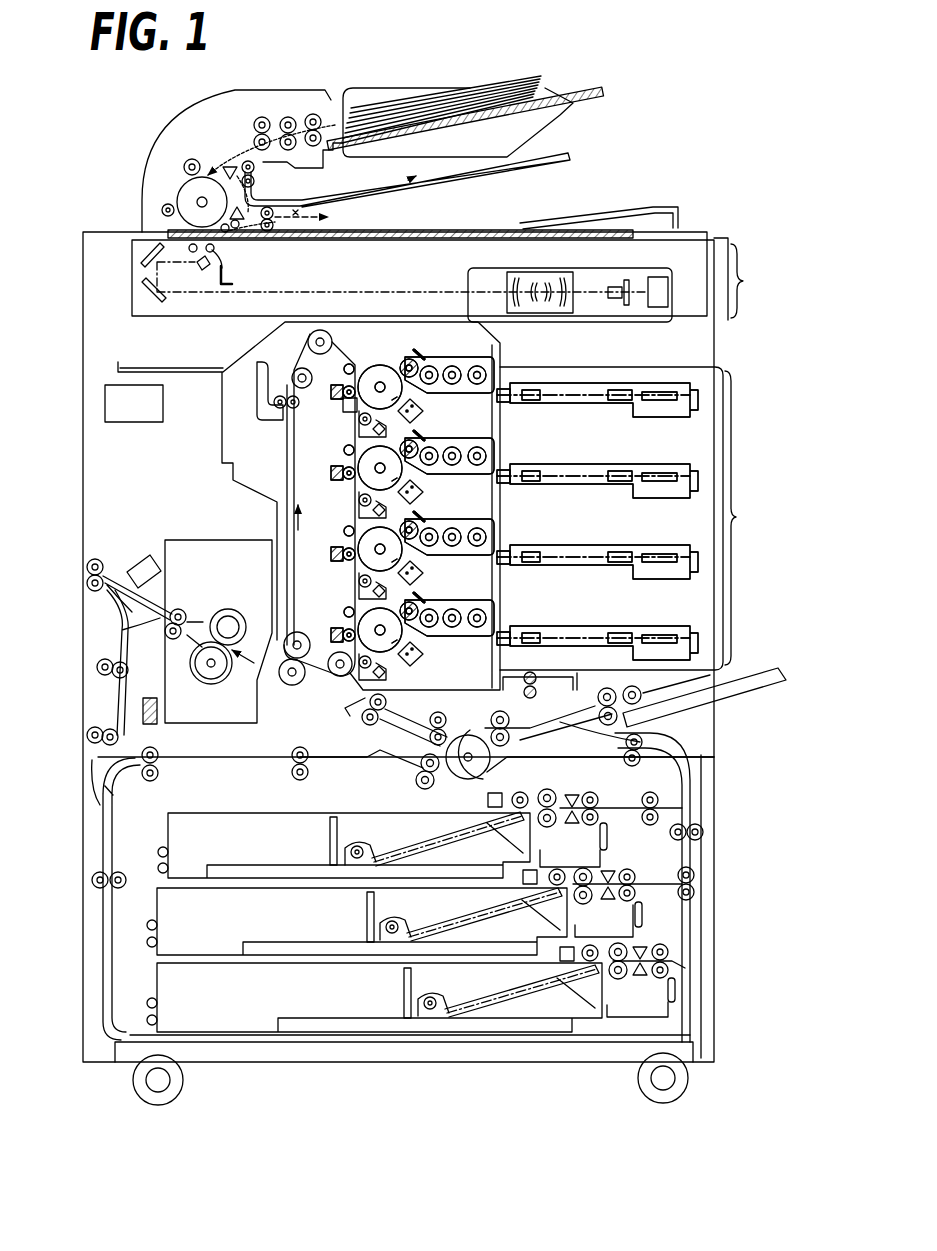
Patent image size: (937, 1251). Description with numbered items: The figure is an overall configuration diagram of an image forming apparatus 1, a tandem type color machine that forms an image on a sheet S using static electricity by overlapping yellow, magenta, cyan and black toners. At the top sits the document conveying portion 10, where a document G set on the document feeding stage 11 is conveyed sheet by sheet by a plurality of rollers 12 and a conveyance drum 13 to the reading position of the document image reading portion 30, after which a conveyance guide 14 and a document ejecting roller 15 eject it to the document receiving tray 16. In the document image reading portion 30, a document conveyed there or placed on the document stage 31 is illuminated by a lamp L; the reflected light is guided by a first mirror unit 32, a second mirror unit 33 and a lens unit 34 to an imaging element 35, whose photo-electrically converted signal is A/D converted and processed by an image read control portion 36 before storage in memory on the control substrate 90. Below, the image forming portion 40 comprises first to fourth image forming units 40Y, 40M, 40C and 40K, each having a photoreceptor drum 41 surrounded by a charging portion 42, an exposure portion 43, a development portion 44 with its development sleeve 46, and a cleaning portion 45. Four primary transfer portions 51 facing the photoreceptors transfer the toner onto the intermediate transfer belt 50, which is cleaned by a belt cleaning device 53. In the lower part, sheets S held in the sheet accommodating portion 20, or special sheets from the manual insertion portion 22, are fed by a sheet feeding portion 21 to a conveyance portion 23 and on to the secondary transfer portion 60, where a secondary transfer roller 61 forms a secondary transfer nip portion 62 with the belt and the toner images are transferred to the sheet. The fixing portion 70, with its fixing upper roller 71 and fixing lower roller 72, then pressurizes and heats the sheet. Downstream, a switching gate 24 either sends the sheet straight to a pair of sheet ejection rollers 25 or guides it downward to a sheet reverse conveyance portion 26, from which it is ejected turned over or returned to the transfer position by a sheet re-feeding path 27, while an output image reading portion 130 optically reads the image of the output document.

The image forming apparatus 1 is at (702, 202).
The document conveying portion 10 is at (615, 174).
The document feeding stage 11 is at (590, 90).
The plurality of rollers 12 is at (204, 170).
The conveyance drum 13 is at (178, 200).
The conveyance guide 14 is at (232, 238).
The document ejecting roller 15 is at (256, 176).
The document receiving tray 16 is at (535, 158).
The sheet accommodating portion 20 is at (168, 815).
The sheet feeding portion 21 is at (552, 790).
The manual insertion portion 22 is at (758, 688).
The conveyance portion 23 is at (418, 720).
The switching gate 24 is at (118, 600).
The pair of sheet ejection rollers 25 is at (88, 572).
The sheet reverse conveyance portion 26 is at (92, 780).
The sheet re-feeding path 27 is at (232, 768).
The document image reading portion 30 is at (451, 279).
The document stage 31 is at (450, 230).
The first mirror unit 32 is at (199, 270).
The second mirror unit 33 is at (137, 262).
The lens unit 34 is at (536, 272).
The imaging element 35 is at (630, 282).
The image read control portion 36 is at (656, 310).
The image forming portion 40 is at (633, 518).
The first image forming unit 40Y is at (518, 358).
The second image forming unit 40M is at (518, 448).
The third image forming unit 40C is at (518, 531).
The fourth image forming unit 40K is at (518, 614).
The photoreceptor drum 41 is at (370, 366).
The charging portion 42 is at (427, 404).
The exposure portion 43 is at (527, 405).
The development portion 44 is at (433, 352).
The cleaning portion 45 is at (358, 436).
The development sleeve 46 is at (412, 355).
The intermediate transfer belt 50 is at (288, 518).
The primary transfer portion 51 is at (345, 410).
The belt cleaning device 53 is at (262, 384).
The secondary transfer portion 60 is at (287, 695).
The secondary transfer roller 61 is at (302, 700).
The secondary transfer nip portion 62 is at (298, 660).
The fixing portion 70 is at (180, 540).
The fixing upper roller 71 is at (231, 609).
The fixing lower roller 72 is at (211, 685).
The control substrate 90 is at (118, 422).
The output image reading portion 130 is at (142, 558).
The document G is at (403, 102).
The sheet S is at (444, 830).
The lamp L is at (226, 275).